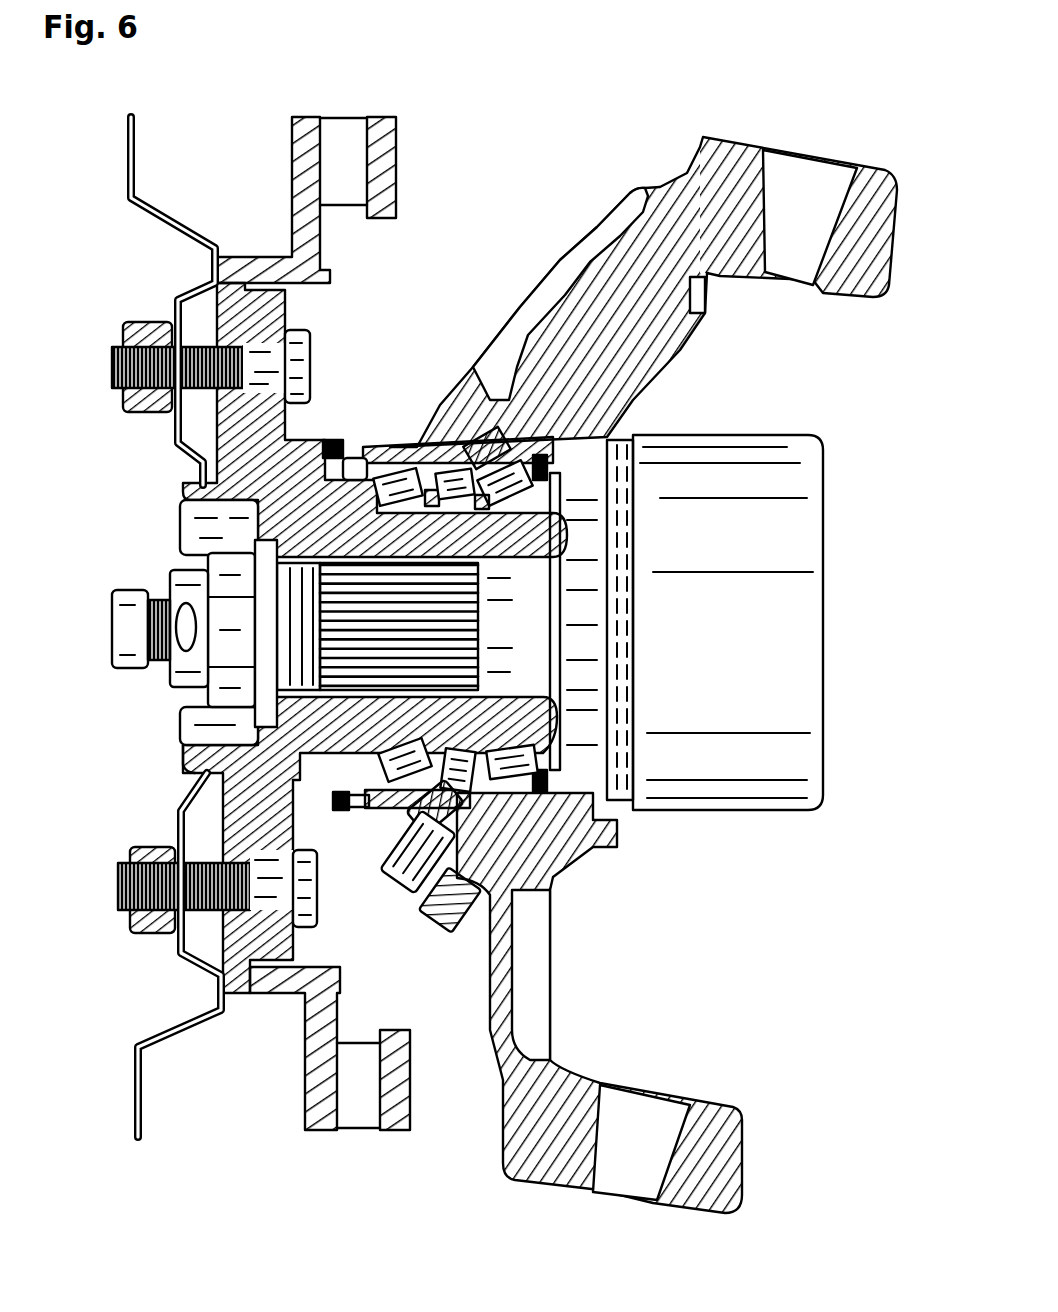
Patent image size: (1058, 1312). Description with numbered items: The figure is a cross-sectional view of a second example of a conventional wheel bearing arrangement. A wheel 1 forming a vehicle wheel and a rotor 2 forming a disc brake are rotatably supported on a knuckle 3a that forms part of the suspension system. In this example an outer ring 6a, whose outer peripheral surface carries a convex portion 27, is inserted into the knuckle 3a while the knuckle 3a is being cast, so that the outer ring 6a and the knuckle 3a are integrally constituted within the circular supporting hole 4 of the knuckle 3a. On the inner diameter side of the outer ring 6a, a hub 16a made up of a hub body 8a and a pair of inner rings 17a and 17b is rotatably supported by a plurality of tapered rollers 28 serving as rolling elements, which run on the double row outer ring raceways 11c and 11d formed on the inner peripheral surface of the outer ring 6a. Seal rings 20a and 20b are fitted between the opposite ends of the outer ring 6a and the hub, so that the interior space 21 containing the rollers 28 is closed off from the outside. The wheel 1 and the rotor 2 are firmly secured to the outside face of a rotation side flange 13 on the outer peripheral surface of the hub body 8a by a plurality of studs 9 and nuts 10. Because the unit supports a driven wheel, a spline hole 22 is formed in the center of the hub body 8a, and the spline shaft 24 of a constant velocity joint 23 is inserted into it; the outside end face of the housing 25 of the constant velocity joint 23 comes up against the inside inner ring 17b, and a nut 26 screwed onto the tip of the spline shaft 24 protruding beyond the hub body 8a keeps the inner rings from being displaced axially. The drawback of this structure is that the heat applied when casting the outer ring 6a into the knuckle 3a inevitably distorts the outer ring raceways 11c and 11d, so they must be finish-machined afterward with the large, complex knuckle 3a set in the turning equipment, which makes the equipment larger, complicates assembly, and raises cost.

The wheel 1 is at (128, 156).
The rotor 2 is at (292, 157).
The knuckle 3a is at (647, 223).
The circular supporting hole 4 is at (430, 447).
The outer ring 6a is at (453, 447).
The hub body 8a is at (177, 500).
The studs 9 is at (277, 350).
The nuts 10 is at (117, 367).
The outer ring raceway 11c is at (395, 815).
The outer ring raceway 11d is at (553, 866).
The rotation side flange 13 is at (213, 310).
The hub 16a is at (166, 480).
The inner ring 17a is at (180, 757).
The inner ring 17b is at (545, 752).
The seal ring 20a is at (333, 438).
The seal ring 20b is at (550, 453).
The interior space 21 is at (410, 453).
The spline hole 22 is at (215, 697).
The constant velocity joint 23 is at (783, 547).
The spline shaft 24 is at (112, 605).
The housing 25 is at (797, 483).
The nut 26 is at (218, 638).
The convex portion 27 is at (470, 447).
The tapered rollers 28 is at (387, 475).